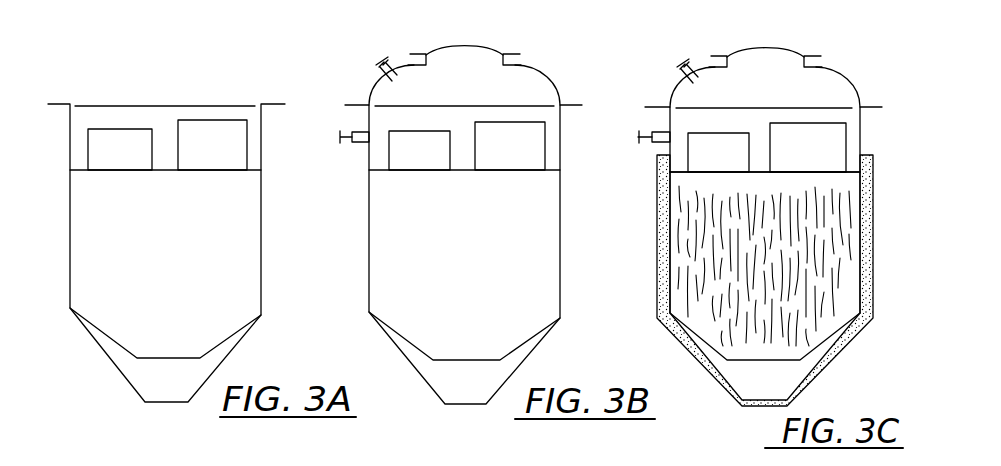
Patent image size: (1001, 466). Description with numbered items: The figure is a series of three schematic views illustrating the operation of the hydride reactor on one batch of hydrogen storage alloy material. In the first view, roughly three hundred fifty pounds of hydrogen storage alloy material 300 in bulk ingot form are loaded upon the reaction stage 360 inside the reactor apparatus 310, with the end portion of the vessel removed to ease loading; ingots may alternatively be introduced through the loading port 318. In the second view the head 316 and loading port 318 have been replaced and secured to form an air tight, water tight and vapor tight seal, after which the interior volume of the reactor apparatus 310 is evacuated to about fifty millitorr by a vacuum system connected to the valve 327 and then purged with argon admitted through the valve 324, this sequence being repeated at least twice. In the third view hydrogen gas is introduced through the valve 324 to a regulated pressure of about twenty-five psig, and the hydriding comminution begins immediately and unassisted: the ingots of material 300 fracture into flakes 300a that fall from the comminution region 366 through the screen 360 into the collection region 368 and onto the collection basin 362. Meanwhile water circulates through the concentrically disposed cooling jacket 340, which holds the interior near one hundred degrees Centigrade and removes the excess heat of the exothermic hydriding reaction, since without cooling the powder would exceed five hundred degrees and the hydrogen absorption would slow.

In FIG. 3A, the hydrogen storage alloy material 300 is at (220, 145).
In FIG. 3B, the hydrogen storage alloy material 300 is at (427, 158).
In FIG. 3C, the hydrogen storage alloy material 300 is at (713, 148).
In FIG. 3C, the flakes 300a is at (807, 297).
In FIG. 3A, the reactor apparatus 310 is at (282, 280).
In FIG. 3B, the reactor apparatus 310 is at (577, 257).
In FIG. 3C, the reactor apparatus 310 is at (890, 170).
In FIG. 3B, the vessel head / lid 316 is at (548, 76).
In FIG. 3C, the vessel head / lid 316 is at (847, 78).
In FIG. 3B, the loading port 318 is at (470, 38).
In FIG. 3C, the loading port 318 is at (773, 40).
In FIG. 3B, the valve 324 is at (375, 76).
In FIG. 3C, the valve 324 is at (678, 74).
In FIG. 3B, the valve 327 is at (348, 133).
In FIG. 3C, the valve 327 is at (647, 133).
In FIG. 3C, the cooling jacket 340 is at (663, 273).
In FIG. 3A, the reaction stage 360 is at (165, 170).
In FIG. 3B, the reaction stage 360 is at (512, 170).
In FIG. 3C, the reaction stage 360 is at (765, 205).
In FIG. 3C, the collection basin 362 is at (712, 357).
In FIG. 3C, the comminution region 366 is at (757, 118).
In FIG. 3C, the collection region 368 is at (716, 244).